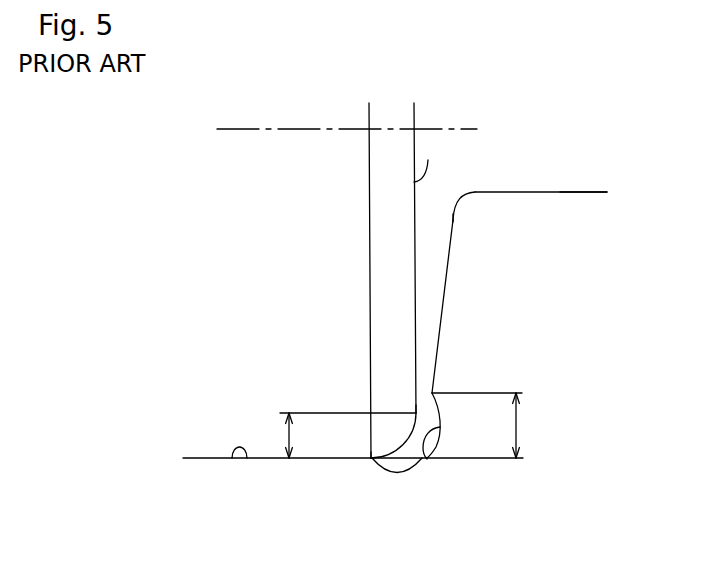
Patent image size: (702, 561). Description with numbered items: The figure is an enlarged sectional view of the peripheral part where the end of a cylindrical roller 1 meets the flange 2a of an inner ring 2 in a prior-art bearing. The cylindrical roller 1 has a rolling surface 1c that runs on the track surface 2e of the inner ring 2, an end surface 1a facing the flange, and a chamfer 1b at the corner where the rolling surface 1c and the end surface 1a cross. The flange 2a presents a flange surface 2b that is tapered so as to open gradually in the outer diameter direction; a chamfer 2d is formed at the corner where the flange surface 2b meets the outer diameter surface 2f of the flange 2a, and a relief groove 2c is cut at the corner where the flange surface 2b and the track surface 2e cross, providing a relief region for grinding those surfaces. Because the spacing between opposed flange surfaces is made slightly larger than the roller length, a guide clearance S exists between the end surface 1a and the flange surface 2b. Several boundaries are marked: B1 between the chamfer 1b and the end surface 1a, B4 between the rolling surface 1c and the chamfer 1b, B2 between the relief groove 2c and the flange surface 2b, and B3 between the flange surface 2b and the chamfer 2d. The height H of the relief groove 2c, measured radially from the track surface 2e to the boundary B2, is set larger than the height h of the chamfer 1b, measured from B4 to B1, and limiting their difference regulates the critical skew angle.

The cylindrical roller 1 is at (220, 199).
The end surface 1a is at (428, 160).
The chamfer 1b is at (393, 472).
The rolling surface 1c is at (202, 460).
The inner ring 2 is at (570, 507).
The flange 2a is at (568, 220).
The flange surface 2b is at (445, 258).
The relief groove 2c is at (427, 459).
The chamfer 2d is at (459, 205).
The track surface 2e is at (247, 458).
The outer diameter surface 2f is at (525, 192).
The guide clearance S is at (427, 301).
The boundary B1 is at (416, 413).
The boundary B2 is at (432, 393).
The boundary B3 is at (453, 218).
The boundary B4 is at (368, 447).
The height of chamfer h is at (339, 435).
The height of relief groove H is at (526, 425).